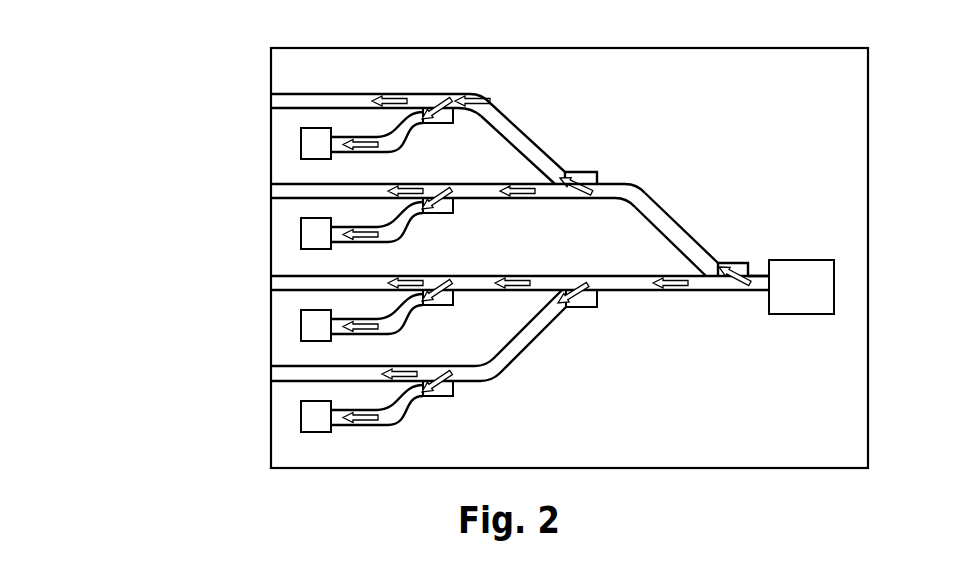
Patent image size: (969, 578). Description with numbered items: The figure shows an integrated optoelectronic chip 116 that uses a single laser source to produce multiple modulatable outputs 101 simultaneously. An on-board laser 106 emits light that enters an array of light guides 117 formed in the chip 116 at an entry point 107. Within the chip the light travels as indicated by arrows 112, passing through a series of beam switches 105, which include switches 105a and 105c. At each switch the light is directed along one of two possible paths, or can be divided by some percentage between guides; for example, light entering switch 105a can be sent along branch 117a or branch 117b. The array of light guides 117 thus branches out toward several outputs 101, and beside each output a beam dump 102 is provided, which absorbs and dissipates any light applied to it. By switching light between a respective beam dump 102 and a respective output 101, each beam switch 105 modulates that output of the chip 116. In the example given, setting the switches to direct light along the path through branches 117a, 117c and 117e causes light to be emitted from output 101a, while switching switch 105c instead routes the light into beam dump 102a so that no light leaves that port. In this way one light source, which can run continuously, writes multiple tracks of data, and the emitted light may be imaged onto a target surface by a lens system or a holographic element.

The modulatable outputs 101 is at (446, 294).
The output 101a is at (270, 80).
The beam dumps 102 is at (301, 232).
The beam dump 102a is at (301, 144).
The beam switches 105 is at (462, 224).
The beam switch 105a is at (727, 320).
The beam switch 105c is at (512, 103).
The on-board laser 106 is at (825, 300).
The entry point 107 is at (768, 295).
The arrows 112 is at (655, 197).
The integrated optoelectronic chip 116 is at (801, 98).
The array of light guides 117 is at (535, 337).
The branch 117a is at (690, 237).
The branch 117b is at (650, 291).
The branch 117c is at (520, 130).
The branch 117e is at (322, 93).